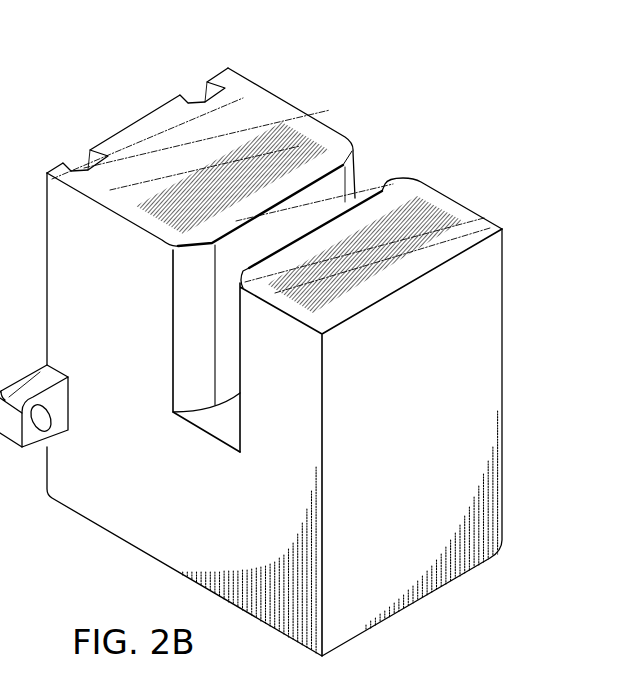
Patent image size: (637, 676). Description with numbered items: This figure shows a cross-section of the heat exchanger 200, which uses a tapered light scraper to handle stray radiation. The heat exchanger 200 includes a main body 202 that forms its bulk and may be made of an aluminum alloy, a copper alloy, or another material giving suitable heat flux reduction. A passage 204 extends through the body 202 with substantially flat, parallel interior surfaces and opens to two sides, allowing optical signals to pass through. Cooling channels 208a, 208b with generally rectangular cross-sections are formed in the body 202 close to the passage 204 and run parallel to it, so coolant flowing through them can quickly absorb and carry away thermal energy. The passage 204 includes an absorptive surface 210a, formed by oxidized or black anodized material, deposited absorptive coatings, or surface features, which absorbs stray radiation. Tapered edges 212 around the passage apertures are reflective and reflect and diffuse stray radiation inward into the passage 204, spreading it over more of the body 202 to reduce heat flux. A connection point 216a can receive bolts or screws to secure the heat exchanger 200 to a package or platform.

The heat exchanger 200 is at (117, 67).
The main body 202 is at (506, 397).
The passage 204 is at (380, 163).
The cooling channel 208a is at (207, 165).
The cooling channel 208b is at (443, 211).
The absorptive surface 210a is at (335, 166).
The tapered edges 212 is at (200, 310).
The connection point 216a is at (50, 420).